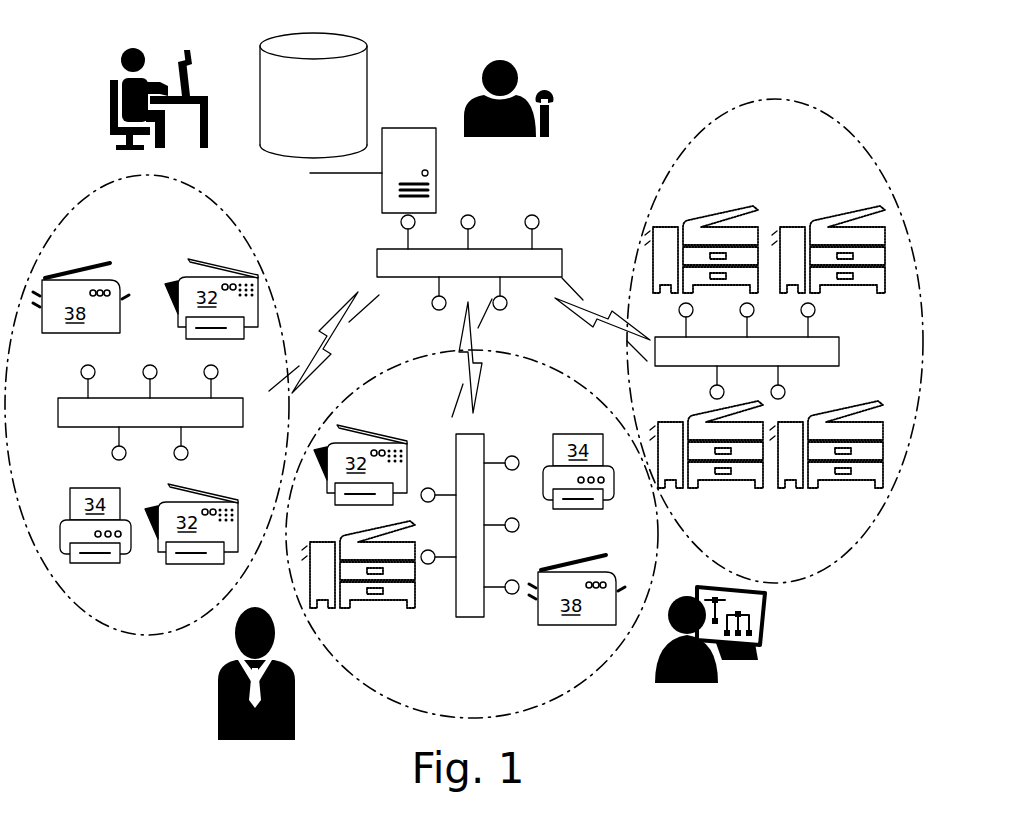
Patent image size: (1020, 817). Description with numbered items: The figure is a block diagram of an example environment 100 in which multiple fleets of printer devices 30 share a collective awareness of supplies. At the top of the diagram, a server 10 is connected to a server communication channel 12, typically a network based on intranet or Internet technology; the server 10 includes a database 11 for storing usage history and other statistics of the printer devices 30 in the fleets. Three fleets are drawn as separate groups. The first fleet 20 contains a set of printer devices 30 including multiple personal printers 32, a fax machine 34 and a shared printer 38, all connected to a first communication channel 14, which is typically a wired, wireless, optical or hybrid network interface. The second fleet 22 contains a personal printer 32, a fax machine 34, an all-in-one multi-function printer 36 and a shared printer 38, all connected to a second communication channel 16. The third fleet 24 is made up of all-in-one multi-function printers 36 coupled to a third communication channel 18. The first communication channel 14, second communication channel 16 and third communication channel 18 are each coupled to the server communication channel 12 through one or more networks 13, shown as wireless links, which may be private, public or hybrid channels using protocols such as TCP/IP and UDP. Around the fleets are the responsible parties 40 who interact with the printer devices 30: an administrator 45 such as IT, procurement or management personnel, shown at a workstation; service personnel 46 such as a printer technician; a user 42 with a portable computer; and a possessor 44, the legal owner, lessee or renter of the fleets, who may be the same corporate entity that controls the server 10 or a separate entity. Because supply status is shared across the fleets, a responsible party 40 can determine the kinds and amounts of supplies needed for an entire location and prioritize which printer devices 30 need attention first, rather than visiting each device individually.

The environment 100 is at (655, 96).
The server 10 is at (400, 161).
The database 11 is at (304, 106).
The server communication channel 12 is at (461, 273).
The network 13 is at (333, 310).
The first communication channel 14 is at (141, 422).
The second communication channel 16 is at (462, 525).
The third communication channel 18 is at (738, 361).
The first fleet 20 is at (232, 215).
The second fleet 22 is at (515, 349).
The third fleet 24 is at (850, 135).
The printer device 30 is at (152, 240).
The personal printer 32 is at (276, 411).
The fax machine 34 is at (337, 498).
The all-in-one multi-function printer 36 is at (699, 292).
The shared printer 38 is at (329, 444).
The responsible party 40 is at (100, 107).
The user 42 is at (757, 634).
The possessor 44 is at (218, 690).
The administrator 45 is at (112, 78).
The service personnel 46 is at (520, 80).